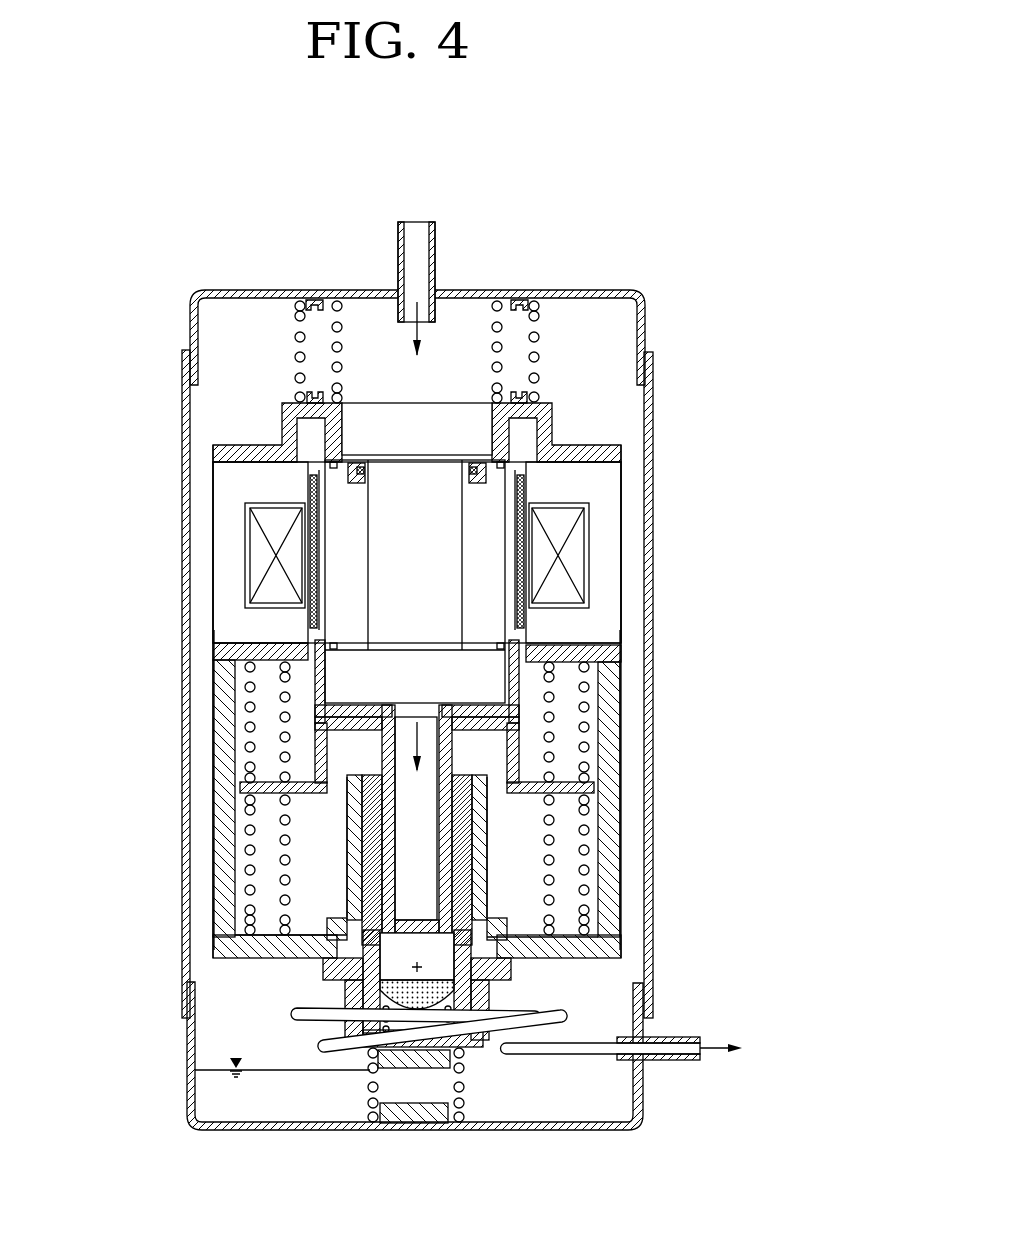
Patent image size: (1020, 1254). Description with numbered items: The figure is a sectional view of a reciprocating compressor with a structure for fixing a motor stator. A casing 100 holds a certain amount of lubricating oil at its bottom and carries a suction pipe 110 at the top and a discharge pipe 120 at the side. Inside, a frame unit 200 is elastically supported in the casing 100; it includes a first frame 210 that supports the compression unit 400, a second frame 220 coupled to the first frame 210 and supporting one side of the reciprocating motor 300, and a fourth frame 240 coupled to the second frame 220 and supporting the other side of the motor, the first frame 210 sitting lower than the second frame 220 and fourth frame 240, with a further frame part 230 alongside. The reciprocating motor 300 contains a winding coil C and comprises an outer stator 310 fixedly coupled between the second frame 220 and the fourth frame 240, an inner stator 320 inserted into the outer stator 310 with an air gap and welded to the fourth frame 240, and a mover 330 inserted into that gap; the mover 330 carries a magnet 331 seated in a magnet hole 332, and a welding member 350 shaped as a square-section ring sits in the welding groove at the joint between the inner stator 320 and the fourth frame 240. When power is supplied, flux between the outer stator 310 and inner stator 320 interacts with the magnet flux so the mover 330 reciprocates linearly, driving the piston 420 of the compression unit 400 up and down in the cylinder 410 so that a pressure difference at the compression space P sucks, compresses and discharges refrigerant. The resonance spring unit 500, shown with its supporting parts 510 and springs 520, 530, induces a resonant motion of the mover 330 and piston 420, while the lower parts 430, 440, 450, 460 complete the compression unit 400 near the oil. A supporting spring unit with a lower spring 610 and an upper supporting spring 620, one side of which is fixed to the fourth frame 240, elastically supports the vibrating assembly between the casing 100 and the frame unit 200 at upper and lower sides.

The casing 100 is at (178, 405).
The suction pipe 110 is at (431, 250).
The discharge pipe 120 is at (681, 1036).
The frame unit 200 is at (745, 575).
The first frame 210 is at (626, 690).
The second frame 220 is at (626, 653).
The frame side 230 is at (624, 460).
The fourth frame 240 is at (566, 419).
The reciprocating motor 300 is at (103, 545).
The outer stator 310 is at (218, 559).
The inner stator 320 is at (337, 590).
The mover 330 is at (312, 621).
The magnet 331 is at (316, 500).
The magnet hole 332 is at (313, 476).
The welding member 350 is at (487, 460).
The compression unit 400 is at (103, 855).
The cylinder 410 is at (357, 863).
The piston 420 is at (378, 895).
The lower frame 430 is at (335, 945).
The discharge valve 440 is at (357, 990).
The valve spring 450 is at (347, 1018).
The oil level 460 is at (370, 1068).
The resonance spring unit 500 is at (745, 735).
The spring support 510 is at (596, 788).
The lower resonant spring 520 is at (599, 840).
The upper resonant spring 530 is at (596, 748).
The lower support spring 610 is at (363, 1099).
The upper supporting spring 620 is at (552, 340).
The winding coil C is at (252, 523).
The compression space P is at (420, 967).